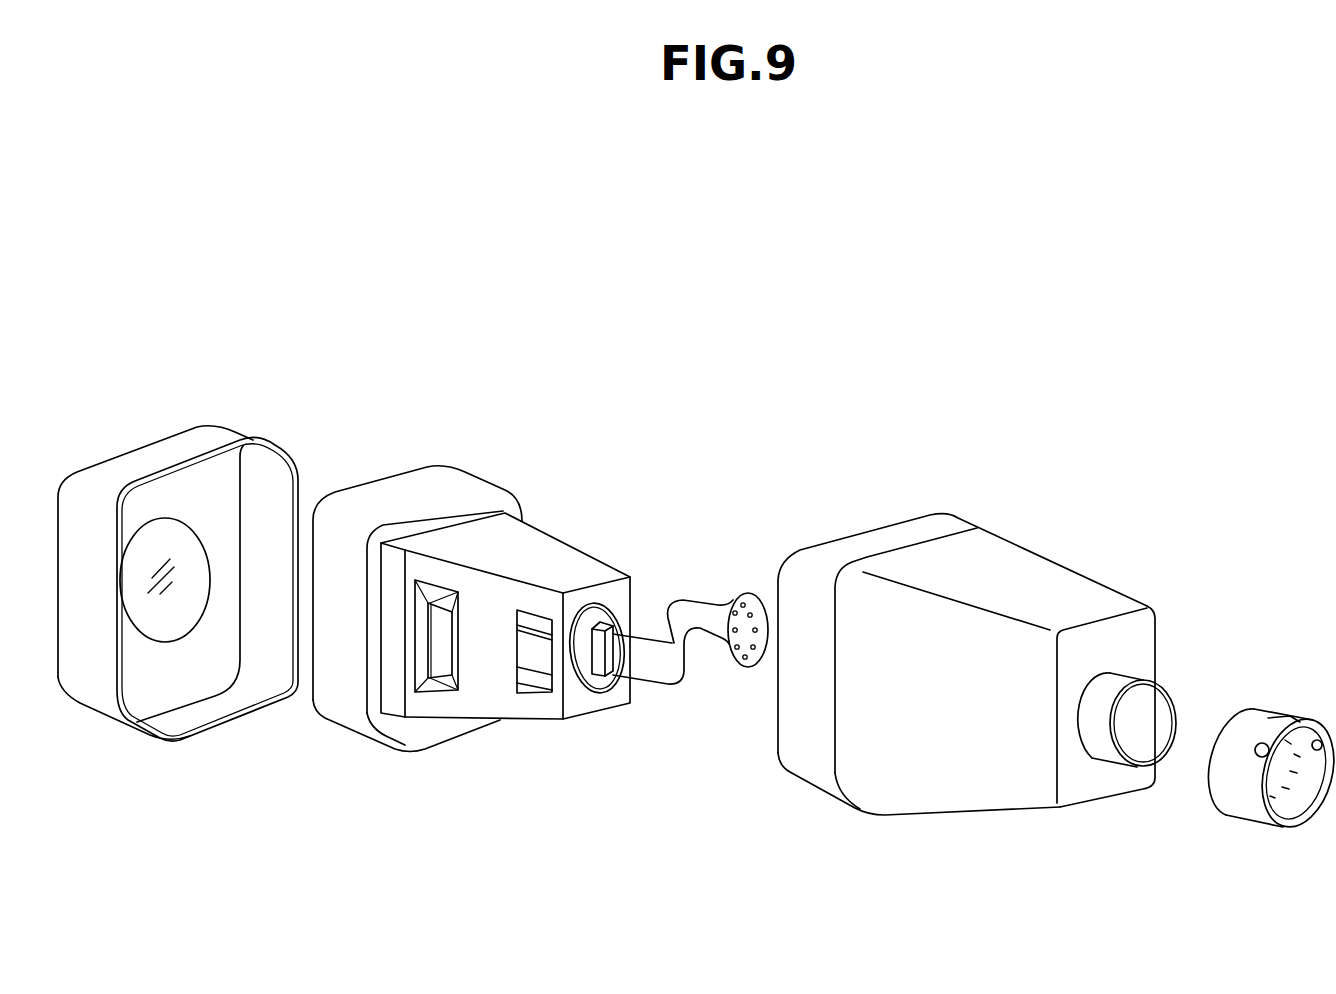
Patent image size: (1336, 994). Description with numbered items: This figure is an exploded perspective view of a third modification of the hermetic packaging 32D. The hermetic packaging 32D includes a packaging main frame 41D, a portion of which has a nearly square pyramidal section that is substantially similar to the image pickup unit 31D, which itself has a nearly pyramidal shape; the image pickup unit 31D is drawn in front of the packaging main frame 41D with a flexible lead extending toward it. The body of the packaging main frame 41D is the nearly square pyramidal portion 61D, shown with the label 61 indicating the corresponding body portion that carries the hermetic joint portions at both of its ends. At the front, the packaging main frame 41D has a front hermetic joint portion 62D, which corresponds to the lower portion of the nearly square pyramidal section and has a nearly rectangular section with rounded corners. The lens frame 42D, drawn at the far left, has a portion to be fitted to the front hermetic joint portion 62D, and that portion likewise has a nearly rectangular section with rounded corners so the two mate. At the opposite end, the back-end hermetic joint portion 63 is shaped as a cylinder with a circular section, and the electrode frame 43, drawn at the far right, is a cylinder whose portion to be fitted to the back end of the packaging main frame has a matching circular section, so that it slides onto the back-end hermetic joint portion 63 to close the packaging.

The hermetic packaging 32D is at (770, 249).
The lens frame 42D is at (147, 440).
The image pickup unit 31D is at (564, 487).
The packaging main frame 41D is at (982, 435).
The front hermetic joint portion 62D is at (866, 532).
The nearly square pyramidal portion 61D is at (1101, 637).
The main frame body portion 61 is at (1063, 567).
The back-end hermetic joint portion 63 is at (1123, 682).
The electrode frame 43 is at (1260, 710).